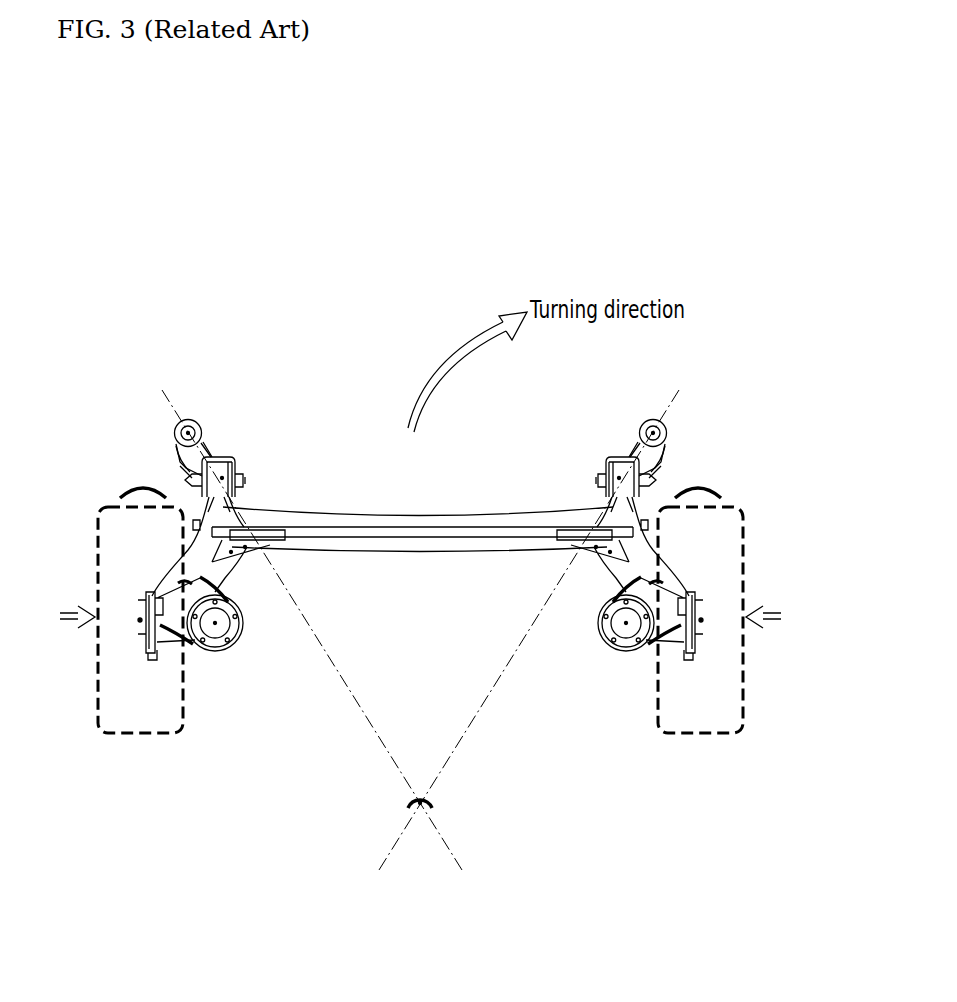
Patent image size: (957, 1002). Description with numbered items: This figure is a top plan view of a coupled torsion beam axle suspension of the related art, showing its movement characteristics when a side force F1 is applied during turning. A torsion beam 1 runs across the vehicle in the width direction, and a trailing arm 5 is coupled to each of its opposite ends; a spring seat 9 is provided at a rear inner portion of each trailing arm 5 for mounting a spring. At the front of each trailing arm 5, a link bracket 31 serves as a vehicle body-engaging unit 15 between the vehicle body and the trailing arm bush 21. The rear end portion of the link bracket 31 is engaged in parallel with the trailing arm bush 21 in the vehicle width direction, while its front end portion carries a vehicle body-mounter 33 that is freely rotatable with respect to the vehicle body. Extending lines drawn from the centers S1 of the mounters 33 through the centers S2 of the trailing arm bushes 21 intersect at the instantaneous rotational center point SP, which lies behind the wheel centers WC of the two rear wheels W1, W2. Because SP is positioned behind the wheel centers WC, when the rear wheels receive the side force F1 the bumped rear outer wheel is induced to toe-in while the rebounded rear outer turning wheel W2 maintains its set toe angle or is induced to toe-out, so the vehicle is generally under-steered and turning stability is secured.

The torsion beam 1 is at (420, 549).
The trailing arm 5 is at (221, 573).
The spring seat 9 is at (238, 631).
The vehicle body-engaging unit 15 is at (167, 420).
The trailing arm bush 21 is at (228, 470).
The link bracket 31 is at (180, 452).
The vehicle body-mounter 33 is at (198, 424).
The center of the mounter S1 is at (203, 433).
The center of the trailing arm bush S2 is at (238, 478).
The wheel center WC is at (139, 624).
The rear wheel W1 is at (150, 737).
The rear outer turning wheel W2 is at (710, 738).
The side force F1 is at (415, 618).
The instantaneous rotational center point SP is at (428, 806).